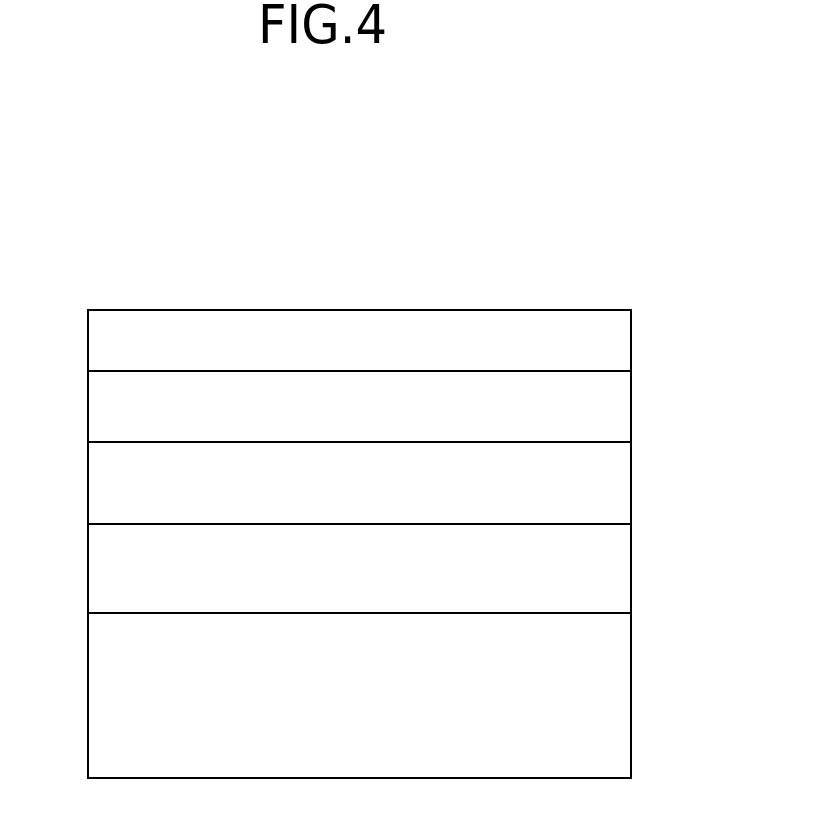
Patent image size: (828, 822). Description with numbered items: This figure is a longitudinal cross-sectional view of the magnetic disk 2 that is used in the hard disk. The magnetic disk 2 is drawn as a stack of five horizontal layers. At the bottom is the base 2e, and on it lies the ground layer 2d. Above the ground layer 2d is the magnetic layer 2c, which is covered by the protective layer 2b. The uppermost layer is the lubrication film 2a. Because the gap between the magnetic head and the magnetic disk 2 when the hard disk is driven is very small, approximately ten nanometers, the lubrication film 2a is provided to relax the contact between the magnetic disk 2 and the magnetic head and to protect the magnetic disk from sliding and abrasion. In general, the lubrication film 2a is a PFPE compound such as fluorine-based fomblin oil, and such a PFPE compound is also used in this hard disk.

The magnetic disk 2 is at (90, 282).
The lubrication film 2a is at (610, 331).
The protective layer 2b is at (609, 405).
The magnetic layer 2c is at (612, 486).
The ground layer 2d is at (604, 567).
The base 2e is at (607, 680).